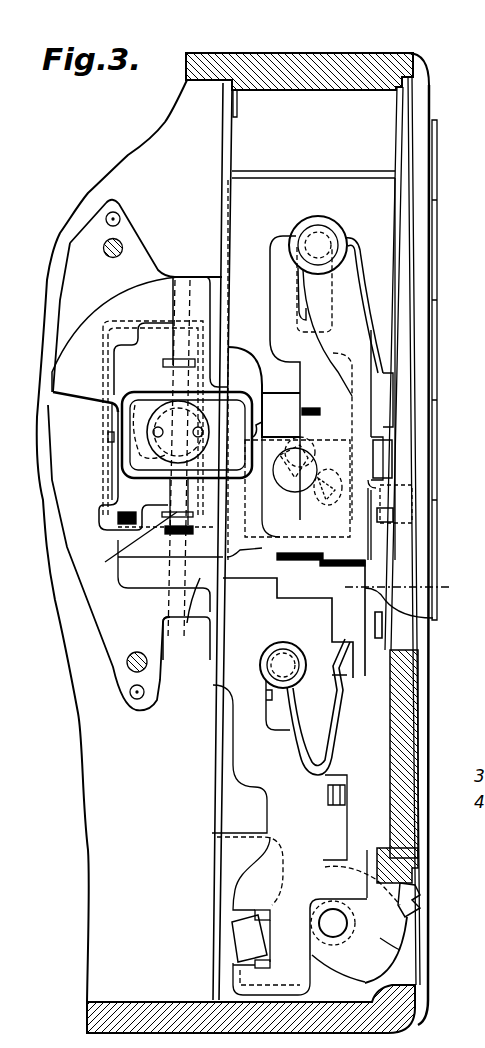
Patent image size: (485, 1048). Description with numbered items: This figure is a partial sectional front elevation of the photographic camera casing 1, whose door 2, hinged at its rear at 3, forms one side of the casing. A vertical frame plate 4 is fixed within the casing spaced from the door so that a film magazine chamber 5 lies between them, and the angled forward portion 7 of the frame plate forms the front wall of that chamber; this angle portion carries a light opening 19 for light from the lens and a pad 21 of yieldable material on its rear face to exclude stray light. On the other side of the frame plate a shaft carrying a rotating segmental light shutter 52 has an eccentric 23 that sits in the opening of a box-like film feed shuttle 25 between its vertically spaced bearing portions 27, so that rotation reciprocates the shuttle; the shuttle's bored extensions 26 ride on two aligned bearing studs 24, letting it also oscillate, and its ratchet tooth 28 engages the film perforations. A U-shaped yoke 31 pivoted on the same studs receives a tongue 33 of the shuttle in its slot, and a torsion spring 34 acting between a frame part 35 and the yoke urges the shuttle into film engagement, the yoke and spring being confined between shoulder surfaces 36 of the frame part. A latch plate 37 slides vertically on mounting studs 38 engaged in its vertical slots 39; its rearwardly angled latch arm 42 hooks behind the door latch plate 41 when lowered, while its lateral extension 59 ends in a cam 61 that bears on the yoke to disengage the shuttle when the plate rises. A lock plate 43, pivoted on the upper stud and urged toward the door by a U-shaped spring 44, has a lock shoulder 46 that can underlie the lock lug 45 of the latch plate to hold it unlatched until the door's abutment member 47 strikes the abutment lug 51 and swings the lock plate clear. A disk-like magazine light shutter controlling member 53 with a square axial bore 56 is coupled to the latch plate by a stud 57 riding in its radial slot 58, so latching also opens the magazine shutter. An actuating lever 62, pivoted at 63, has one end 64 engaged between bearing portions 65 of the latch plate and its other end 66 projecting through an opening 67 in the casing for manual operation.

The photographic camera casing 1 is at (335, 62).
The door 2 is at (420, 108).
The hinge 3 is at (437, 155).
The frame plate 4 is at (225, 131).
The film magazine chamber 5 is at (398, 192).
The forward portion of the frame plate 7 is at (288, 190).
The light opening 19 is at (305, 405).
The pad 21 is at (333, 358).
The eccentric 23 is at (105, 418).
The bearing studs 24 is at (198, 277).
The film feed shuttle 25 is at (130, 472).
The bored extensions 26 is at (165, 360).
The bearing portions 27 is at (150, 384).
The ratchet tooth 28 is at (268, 422).
The U-shaped yoke 31 is at (115, 502).
The tongue 33 is at (110, 438).
The torsion spring 34 is at (126, 547).
The frame part 35 is at (115, 660).
The shoulder surfaces 36 is at (162, 318).
The latch plate 37 is at (278, 287).
The mounting studs 38 is at (322, 233).
The vertical slots 39 is at (300, 308).
The door latch plate 41 is at (392, 430).
The latch arm 42 is at (392, 462).
The lock plate 43 is at (315, 563).
The U-shaped spring 44 is at (336, 742).
The lock lug 45 is at (383, 630).
The lock shoulder 46 is at (395, 617).
The abutment member 47 is at (392, 497).
The abutment lug 51 is at (395, 518).
The rotating segmental light shutter 52 is at (100, 312).
The magazine light shutter controlling member 53 is at (290, 505).
The axial bore 56 is at (288, 478).
The stud 57 is at (326, 506).
The radial slot 58 is at (328, 455).
The lateral extension 59 is at (180, 619).
The cam 61 is at (130, 520).
The actuating lever 62 is at (400, 950).
The pivot 63 is at (348, 930).
The end of the lever 64 is at (238, 937).
The bearing portions 65 is at (233, 913).
The other end of the lever 66 is at (420, 898).
The opening 67 is at (413, 937).